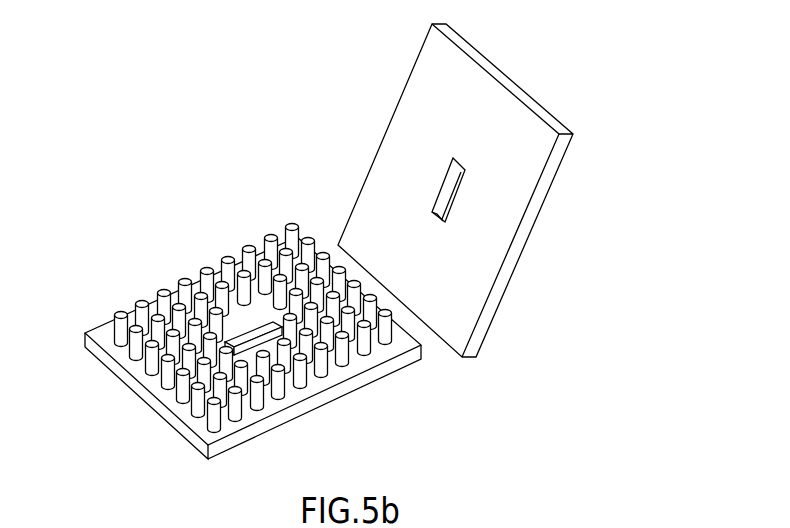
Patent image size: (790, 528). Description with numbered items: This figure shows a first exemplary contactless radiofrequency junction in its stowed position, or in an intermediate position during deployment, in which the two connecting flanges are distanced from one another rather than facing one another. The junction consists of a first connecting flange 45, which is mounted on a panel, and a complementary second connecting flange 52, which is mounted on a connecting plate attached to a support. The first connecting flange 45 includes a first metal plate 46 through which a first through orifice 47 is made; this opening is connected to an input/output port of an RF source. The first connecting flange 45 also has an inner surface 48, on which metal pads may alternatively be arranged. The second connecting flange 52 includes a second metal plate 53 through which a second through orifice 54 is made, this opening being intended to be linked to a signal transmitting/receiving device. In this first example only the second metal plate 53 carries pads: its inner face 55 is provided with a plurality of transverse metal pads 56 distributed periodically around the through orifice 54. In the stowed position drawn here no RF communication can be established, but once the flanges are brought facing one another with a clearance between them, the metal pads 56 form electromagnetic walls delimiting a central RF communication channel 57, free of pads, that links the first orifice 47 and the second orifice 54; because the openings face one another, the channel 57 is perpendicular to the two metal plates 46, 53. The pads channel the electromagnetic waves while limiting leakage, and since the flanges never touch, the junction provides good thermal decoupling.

The first connecting flange 45 is at (462, 190).
The first metal plate 46 is at (387, 132).
The first through orifice 47 is at (450, 190).
The inner surface of the first connecting flange 48 is at (500, 113).
The second connecting flange 52 is at (256, 312).
The second metal plate 53 is at (253, 358).
The second through orifice 54 is at (243, 333).
The inner face 55 is at (183, 408).
The transverse metal pads 56 is at (237, 289).
The RF communication channel 57 is at (253, 289).